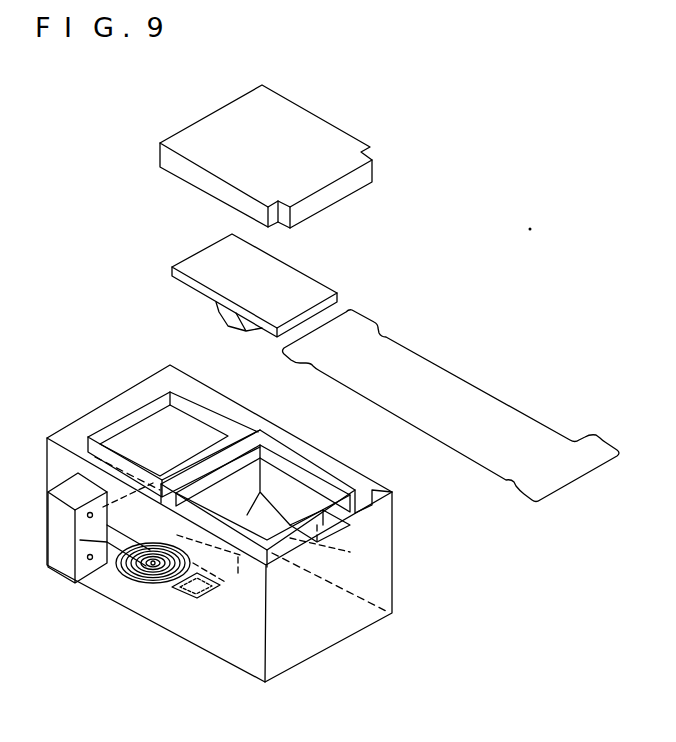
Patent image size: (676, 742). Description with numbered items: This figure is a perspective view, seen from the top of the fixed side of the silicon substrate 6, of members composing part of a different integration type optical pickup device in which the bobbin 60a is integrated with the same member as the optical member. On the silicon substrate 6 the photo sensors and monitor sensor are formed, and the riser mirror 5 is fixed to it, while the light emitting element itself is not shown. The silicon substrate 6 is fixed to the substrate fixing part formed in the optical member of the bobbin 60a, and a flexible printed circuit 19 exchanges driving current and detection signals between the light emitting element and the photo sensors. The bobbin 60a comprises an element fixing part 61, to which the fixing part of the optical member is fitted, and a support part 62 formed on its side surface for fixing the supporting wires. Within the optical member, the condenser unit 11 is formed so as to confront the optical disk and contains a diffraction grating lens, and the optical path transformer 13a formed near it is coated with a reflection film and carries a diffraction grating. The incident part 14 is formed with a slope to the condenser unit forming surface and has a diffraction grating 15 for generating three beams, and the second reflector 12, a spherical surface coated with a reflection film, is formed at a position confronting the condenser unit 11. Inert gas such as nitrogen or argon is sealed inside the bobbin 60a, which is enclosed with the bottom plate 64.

The bottom plate 64 is at (330, 133).
The silicon substrate 6 is at (293, 277).
The riser mirror 5 is at (232, 327).
The flexible printed circuit 19 is at (475, 397).
The bobbin 60a is at (378, 557).
The second reflector 12 is at (158, 422).
The incident part 14 is at (335, 470).
The element fixing part 61 is at (232, 465).
The diffraction grating 15 is at (250, 517).
The support part 62 is at (68, 555).
The condenser unit 11 is at (142, 583).
The optical path transformer 13a is at (187, 598).